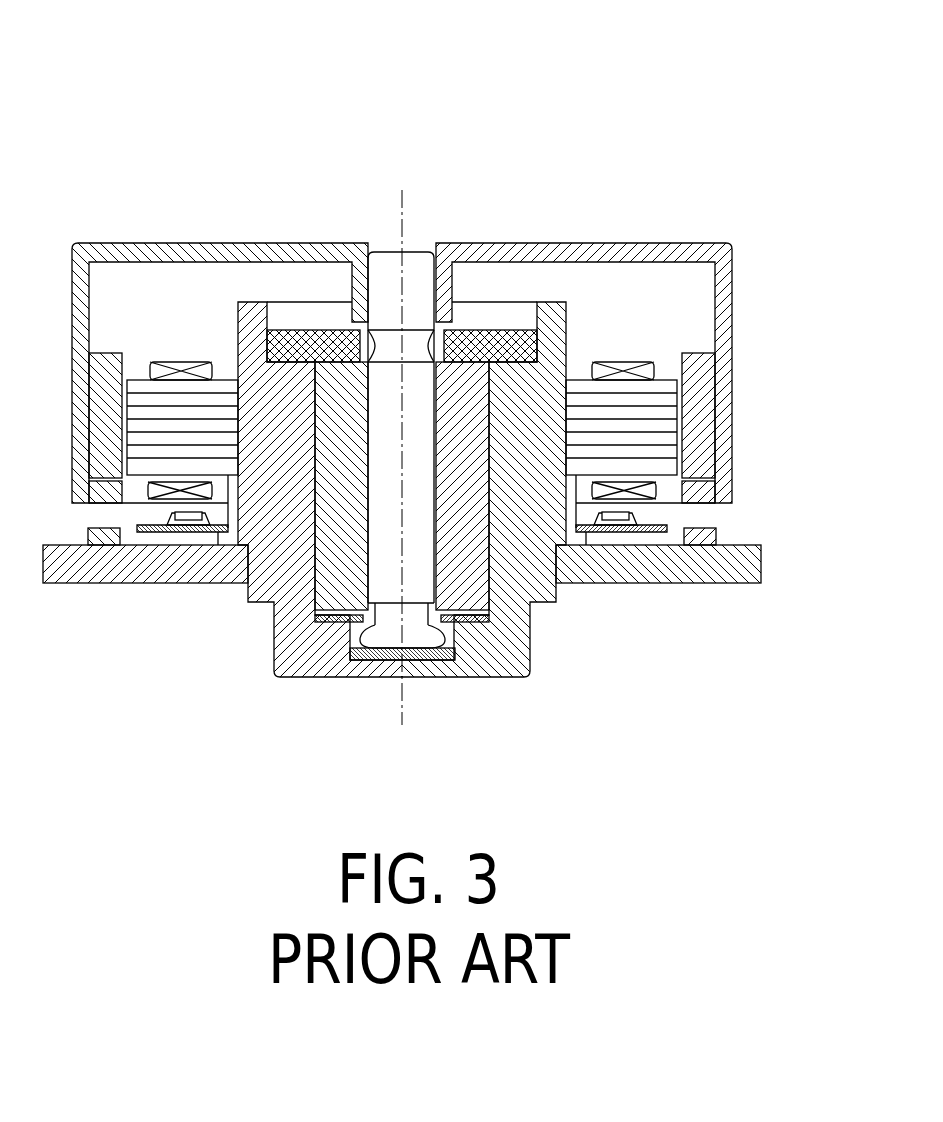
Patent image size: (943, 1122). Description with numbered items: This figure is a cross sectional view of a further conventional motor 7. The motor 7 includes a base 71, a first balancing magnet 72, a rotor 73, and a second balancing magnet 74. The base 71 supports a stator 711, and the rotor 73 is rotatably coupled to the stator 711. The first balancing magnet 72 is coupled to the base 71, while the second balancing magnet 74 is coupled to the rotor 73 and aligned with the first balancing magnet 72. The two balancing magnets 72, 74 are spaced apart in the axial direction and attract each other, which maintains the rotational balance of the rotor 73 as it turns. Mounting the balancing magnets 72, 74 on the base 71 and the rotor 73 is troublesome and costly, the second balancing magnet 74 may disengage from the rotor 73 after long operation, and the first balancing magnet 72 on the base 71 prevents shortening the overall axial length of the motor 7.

The conventional motor 7 is at (106, 200).
The rotor 73 is at (733, 281).
The stator 711 is at (668, 404).
The second balancing magnet 74 is at (707, 505).
The first balancing magnet 72 is at (710, 523).
The base 71 is at (720, 584).